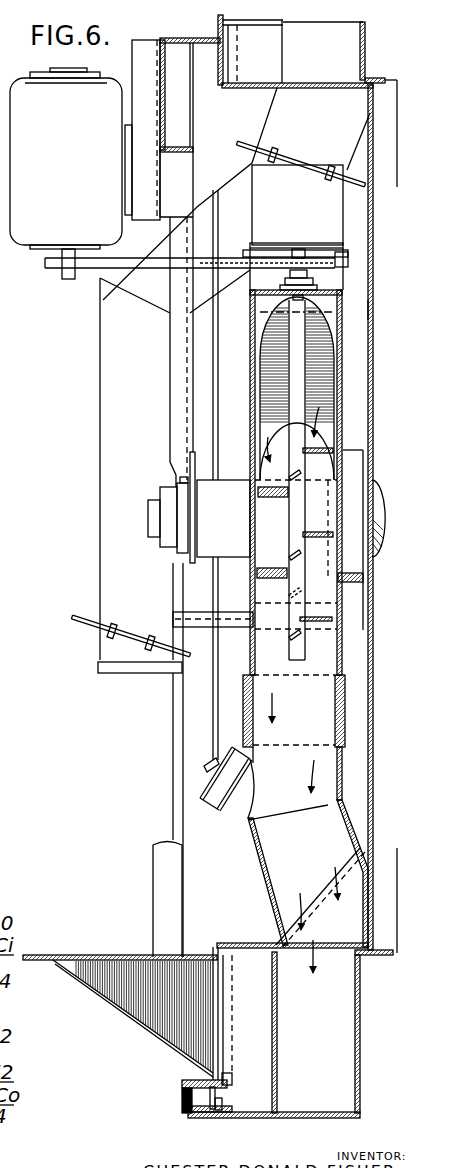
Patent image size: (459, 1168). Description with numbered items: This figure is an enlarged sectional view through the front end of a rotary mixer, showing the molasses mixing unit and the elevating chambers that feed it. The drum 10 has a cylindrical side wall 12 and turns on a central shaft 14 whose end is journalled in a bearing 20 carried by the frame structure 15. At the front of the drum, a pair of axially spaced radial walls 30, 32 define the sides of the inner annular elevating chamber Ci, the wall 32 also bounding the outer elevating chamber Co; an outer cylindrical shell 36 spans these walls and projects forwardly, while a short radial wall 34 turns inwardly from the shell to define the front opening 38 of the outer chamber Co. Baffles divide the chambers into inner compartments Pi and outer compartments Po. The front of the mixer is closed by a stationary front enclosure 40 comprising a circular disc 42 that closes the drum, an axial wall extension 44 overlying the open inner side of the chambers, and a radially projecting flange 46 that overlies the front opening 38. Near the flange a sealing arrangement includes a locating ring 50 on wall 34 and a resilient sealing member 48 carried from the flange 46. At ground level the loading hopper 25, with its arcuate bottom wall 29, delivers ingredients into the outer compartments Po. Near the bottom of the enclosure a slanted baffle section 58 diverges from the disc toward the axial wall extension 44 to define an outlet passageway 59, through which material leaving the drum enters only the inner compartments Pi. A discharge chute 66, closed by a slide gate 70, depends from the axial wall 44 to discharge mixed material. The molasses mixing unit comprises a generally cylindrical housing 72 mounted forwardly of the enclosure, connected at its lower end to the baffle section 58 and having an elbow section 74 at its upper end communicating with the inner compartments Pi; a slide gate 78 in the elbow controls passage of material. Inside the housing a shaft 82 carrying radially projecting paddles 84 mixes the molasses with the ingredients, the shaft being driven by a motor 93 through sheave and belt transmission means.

The cylindrical drum 10 is at (392, 79).
The cylindrical side wall 12 is at (398, 84).
The axially extending shaft 14 is at (375, 497).
The frame structure 15 is at (159, 68).
The bearing 20 is at (168, 543).
The loading hopper 25 is at (147, 1002).
The arcuate bottom wall 29 is at (90, 990).
The axially spaced wall 30 is at (357, 1087).
The axially spaced wall 32 is at (275, 1086).
The short radial wall 34 is at (235, 1097).
The outer cylindrical shell 36 is at (315, 1116).
The front opening 38 is at (215, 975).
The stationary front enclosure 40 is at (372, 256).
The circular disc 42 is at (372, 302).
The axial wall extension 44 is at (272, 95).
The flange 46 is at (222, 23).
The annular resilient sealing member 48 is at (186, 1098).
The locating ring 50 is at (190, 1113).
The slanted baffle section 58 is at (283, 933).
The outlet chute or passageway 59 is at (367, 857).
The discharge chute 66 is at (108, 340).
The slide gate 70 is at (88, 628).
The cylindrical housing 72 is at (340, 422).
The elbow section 74 is at (272, 208).
The slide gate 78 is at (258, 145).
The shaft 82 is at (300, 358).
The paddles or arms 84 is at (300, 472).
The motor 93 is at (77, 160).
The inner annular elevating chamber Ci is at (403, 45).
The inner compartments Pi is at (343, 63).
The outer compartments Po is at (248, 59).
The outer annular elevating chamber Co is at (233, 1098).